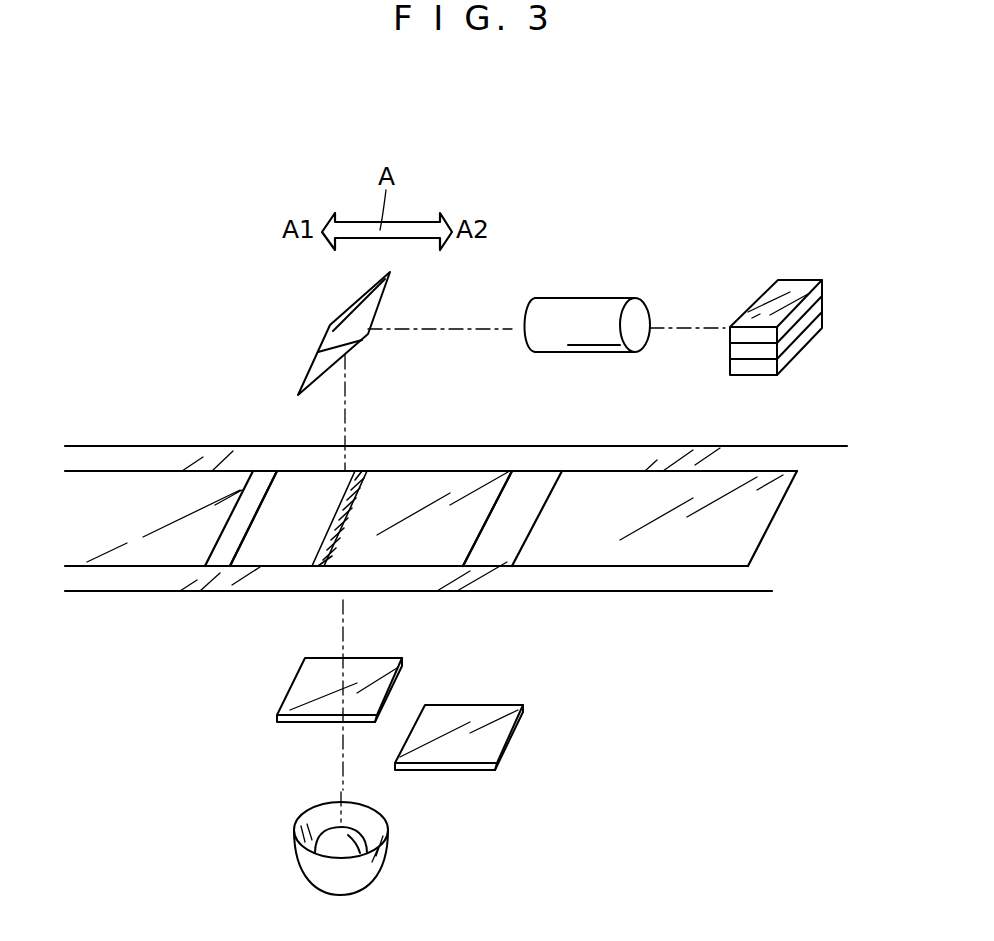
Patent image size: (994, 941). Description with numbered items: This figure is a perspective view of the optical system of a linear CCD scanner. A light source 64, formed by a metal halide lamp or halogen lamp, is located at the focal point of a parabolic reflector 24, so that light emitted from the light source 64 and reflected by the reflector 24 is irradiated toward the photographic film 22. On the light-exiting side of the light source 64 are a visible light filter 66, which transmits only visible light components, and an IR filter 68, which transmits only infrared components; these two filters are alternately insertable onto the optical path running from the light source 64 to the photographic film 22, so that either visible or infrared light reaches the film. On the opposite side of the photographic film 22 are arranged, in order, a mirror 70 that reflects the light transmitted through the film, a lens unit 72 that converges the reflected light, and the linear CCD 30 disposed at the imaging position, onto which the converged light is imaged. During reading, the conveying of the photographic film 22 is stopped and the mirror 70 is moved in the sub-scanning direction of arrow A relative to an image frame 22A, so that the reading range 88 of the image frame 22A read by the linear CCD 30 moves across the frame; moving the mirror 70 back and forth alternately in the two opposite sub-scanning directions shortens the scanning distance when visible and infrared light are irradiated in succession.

The photographic film 22 is at (537, 468).
The image frame 22A is at (422, 487).
The parabolic reflector 24 is at (348, 878).
The linear CCD 30 is at (785, 288).
The light source 64 is at (383, 840).
The visible light filter 66 is at (372, 665).
The IR filter 68 is at (475, 715).
The mirror 70 is at (330, 338).
The lens unit 72 is at (580, 313).
The reading range 88 is at (318, 546).